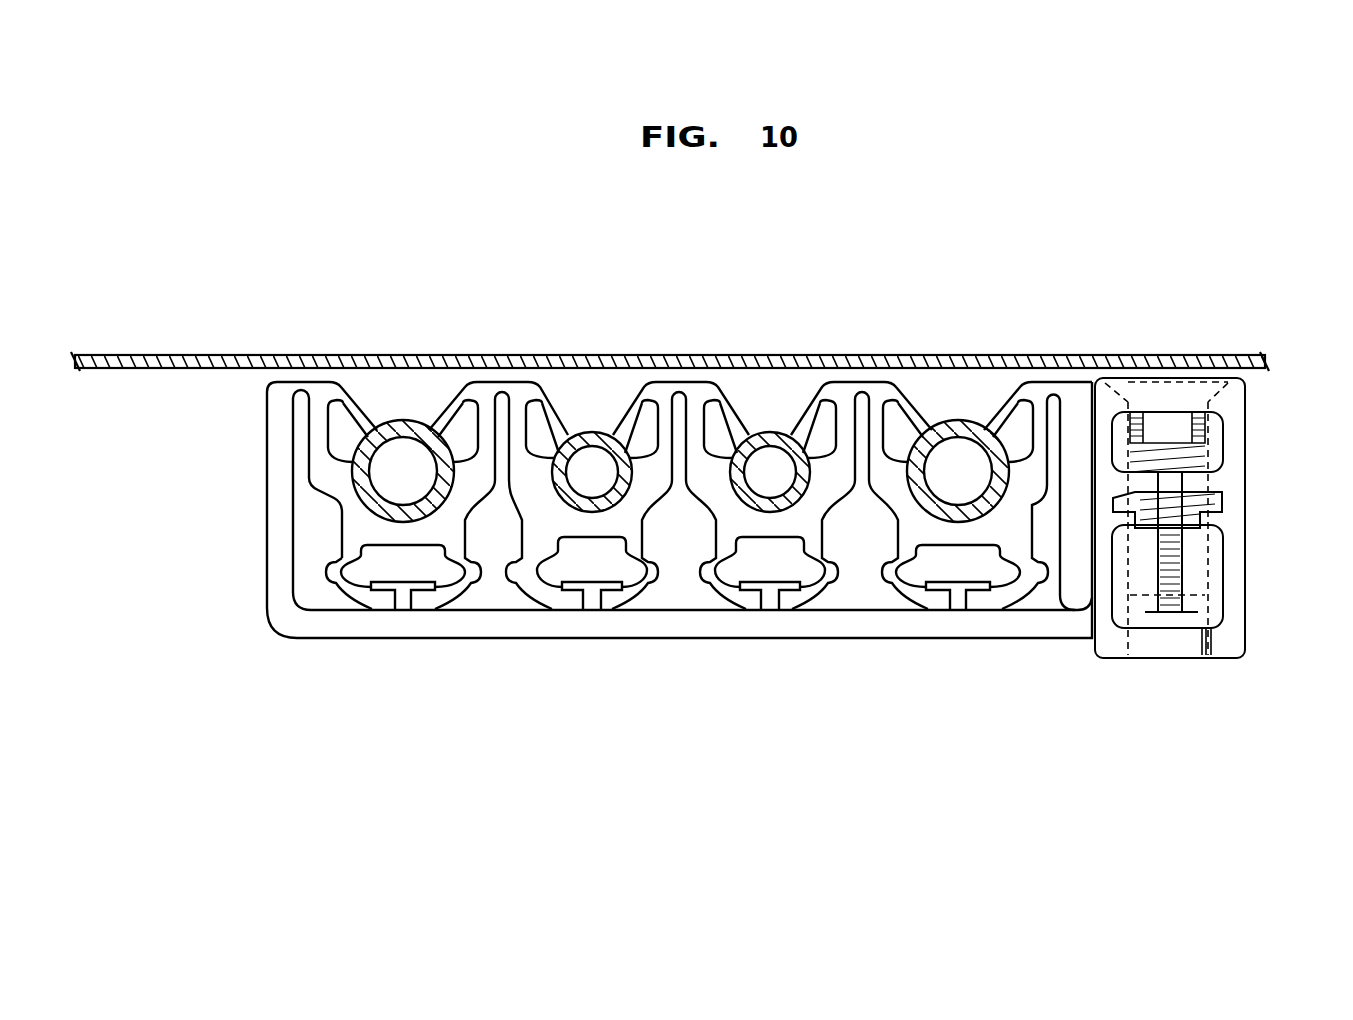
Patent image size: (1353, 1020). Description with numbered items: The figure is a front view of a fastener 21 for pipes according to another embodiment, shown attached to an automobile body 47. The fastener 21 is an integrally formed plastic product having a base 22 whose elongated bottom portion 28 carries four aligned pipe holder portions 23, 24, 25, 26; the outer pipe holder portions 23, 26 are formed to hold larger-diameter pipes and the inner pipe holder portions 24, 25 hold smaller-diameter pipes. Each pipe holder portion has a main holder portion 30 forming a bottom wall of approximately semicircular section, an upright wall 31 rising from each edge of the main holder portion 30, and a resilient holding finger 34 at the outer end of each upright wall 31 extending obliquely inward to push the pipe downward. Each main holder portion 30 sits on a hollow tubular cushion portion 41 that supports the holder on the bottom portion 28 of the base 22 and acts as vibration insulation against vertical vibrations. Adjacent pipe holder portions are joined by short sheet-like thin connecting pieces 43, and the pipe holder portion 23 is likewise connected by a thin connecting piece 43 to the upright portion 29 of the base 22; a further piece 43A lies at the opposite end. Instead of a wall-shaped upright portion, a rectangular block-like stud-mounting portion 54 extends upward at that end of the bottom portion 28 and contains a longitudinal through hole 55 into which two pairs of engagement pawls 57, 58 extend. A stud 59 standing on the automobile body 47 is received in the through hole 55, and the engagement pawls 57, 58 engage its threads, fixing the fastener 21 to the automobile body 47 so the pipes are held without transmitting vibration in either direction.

The fastener 21 is at (262, 526).
The base 22 is at (262, 626).
The pipe holder portion 23 is at (416, 404).
The pipe holder portion 24 is at (589, 410).
The pipe holder portion 25 is at (765, 410).
The pipe holder portion 26 is at (954, 408).
The bottom portion 28 is at (447, 627).
The upright portion 29 is at (282, 432).
The main holder portion 30 is at (343, 503).
The upright wall 31 is at (317, 441).
The resilient holding finger 34 is at (362, 405).
The hollow tubular cushion portion 41 is at (347, 592).
The thin connecting piece 43 is at (300, 388).
The end slot 43A is at (1072, 388).
The automobile body 47 is at (185, 352).
The stud-mounting portion 54 is at (1254, 423).
The through hole 55 is at (1205, 598).
The engagement pawls 57 is at (1178, 418).
The engagement pawls 58 is at (1245, 500).
The stud 59 is at (1147, 568).